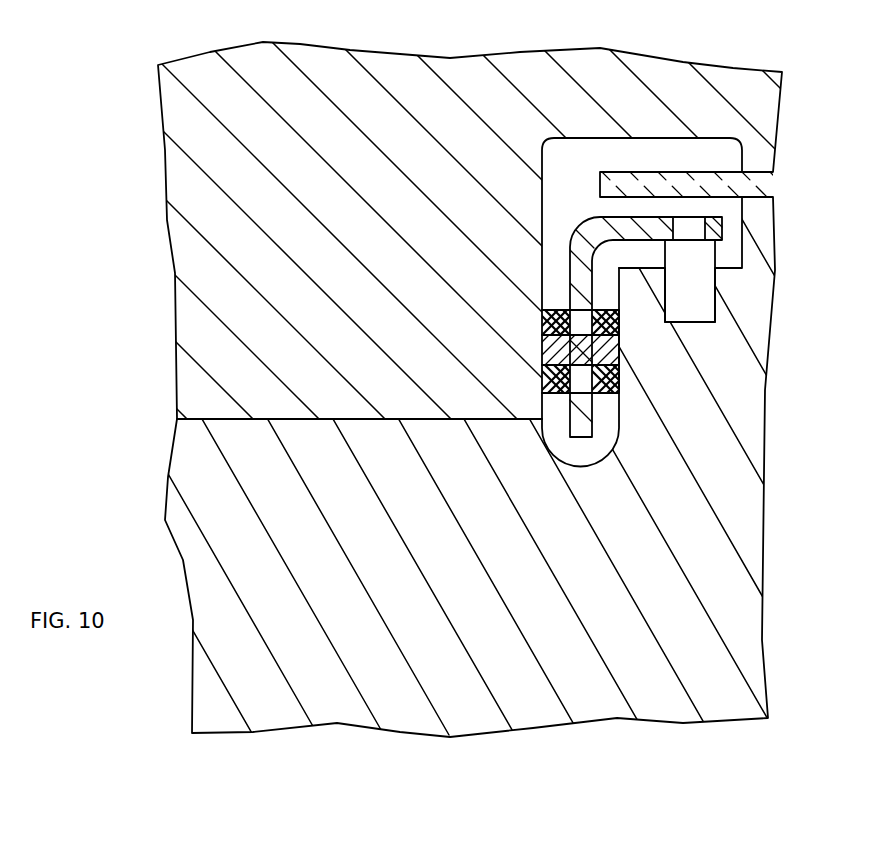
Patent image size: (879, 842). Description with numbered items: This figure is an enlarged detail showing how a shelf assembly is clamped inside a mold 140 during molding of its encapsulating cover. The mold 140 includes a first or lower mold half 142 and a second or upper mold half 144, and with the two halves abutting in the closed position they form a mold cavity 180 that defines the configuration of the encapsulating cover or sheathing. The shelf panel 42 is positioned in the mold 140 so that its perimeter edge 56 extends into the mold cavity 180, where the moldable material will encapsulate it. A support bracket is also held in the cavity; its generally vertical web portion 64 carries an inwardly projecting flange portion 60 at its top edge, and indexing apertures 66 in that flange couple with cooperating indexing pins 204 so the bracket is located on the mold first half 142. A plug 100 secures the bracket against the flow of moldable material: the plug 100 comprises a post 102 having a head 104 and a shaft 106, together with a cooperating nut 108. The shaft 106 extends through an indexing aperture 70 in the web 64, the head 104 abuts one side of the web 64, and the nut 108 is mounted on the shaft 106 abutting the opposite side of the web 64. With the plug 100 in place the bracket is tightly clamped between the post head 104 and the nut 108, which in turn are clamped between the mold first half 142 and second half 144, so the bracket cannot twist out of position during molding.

The second or upper mold half 144 is at (396, 68).
The first or lower mold half 142 is at (660, 712).
The mold 140 is at (531, 742).
The mold cavity 180 is at (567, 159).
The shelf panel 42 is at (772, 180).
The perimeter edge 56 is at (600, 192).
The web portion 64 is at (587, 415).
The indexing apertures 66 is at (706, 217).
The flange portion 60 is at (722, 232).
The indexing pins 204 is at (708, 295).
The plug 100 is at (620, 350).
The post 102 is at (680, 384).
The head 104 is at (677, 403).
The nut 108 is at (545, 297).
The shaft 106 is at (540, 343).
The indexing apertures 70 is at (585, 377).